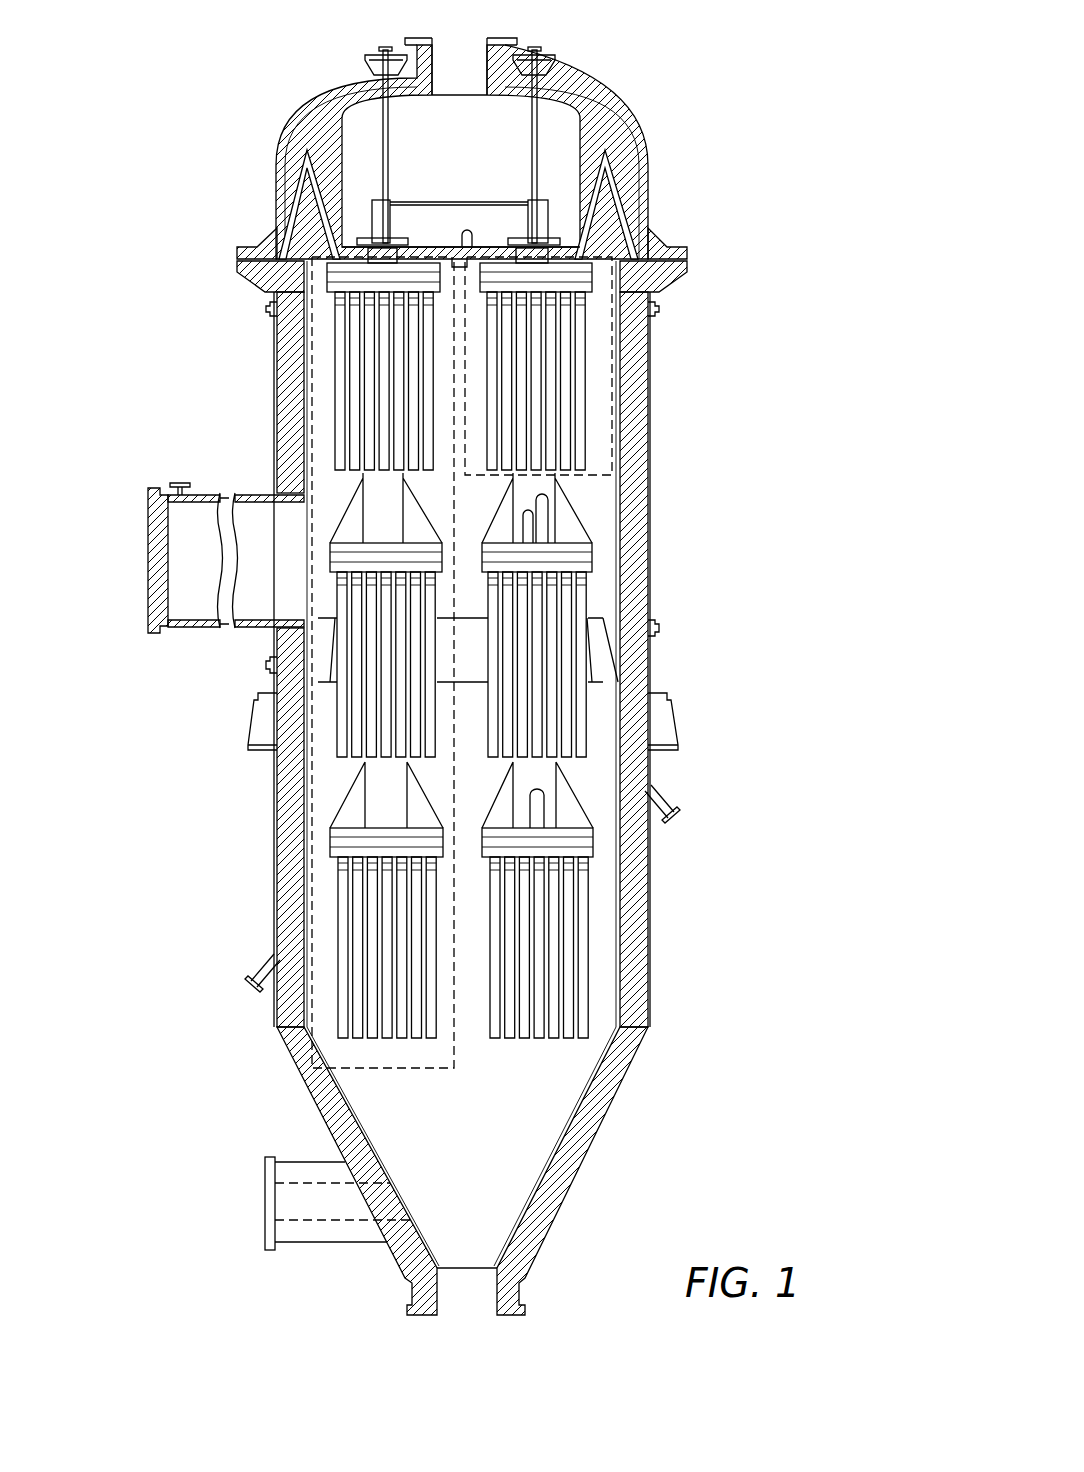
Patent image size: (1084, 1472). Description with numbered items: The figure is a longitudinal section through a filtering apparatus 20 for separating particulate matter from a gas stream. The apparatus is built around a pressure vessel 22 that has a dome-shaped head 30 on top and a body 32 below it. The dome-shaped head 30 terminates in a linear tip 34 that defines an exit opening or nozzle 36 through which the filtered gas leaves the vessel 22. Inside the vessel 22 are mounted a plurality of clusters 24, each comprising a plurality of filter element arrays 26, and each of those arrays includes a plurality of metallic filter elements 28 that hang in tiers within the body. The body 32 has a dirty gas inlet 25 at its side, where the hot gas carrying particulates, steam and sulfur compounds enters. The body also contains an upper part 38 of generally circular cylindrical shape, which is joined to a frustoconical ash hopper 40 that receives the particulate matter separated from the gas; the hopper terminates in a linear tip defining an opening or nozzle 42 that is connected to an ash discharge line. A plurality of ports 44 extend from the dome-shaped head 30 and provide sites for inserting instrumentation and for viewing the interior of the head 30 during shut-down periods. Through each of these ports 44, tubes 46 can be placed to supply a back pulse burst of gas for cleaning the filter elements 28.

The filtering apparatus 20 is at (703, 396).
The pressure vessel 22 is at (658, 580).
The clusters 24 is at (312, 408).
The dirty gas inlet 25 is at (148, 542).
The filter element arrays 26 is at (353, 372).
The metallic filter elements 28 is at (340, 460).
The dome-shaped head 30 is at (635, 124).
The body 32 is at (652, 935).
The linear tip 34 is at (508, 49).
The exit opening or nozzle 36 is at (466, 47).
The upper part 38 is at (651, 519).
The frustoconical ash hopper 40 is at (574, 1180).
The opening or nozzle 42 is at (468, 1308).
The ports 44 is at (373, 70).
The tubes 46 is at (384, 52).